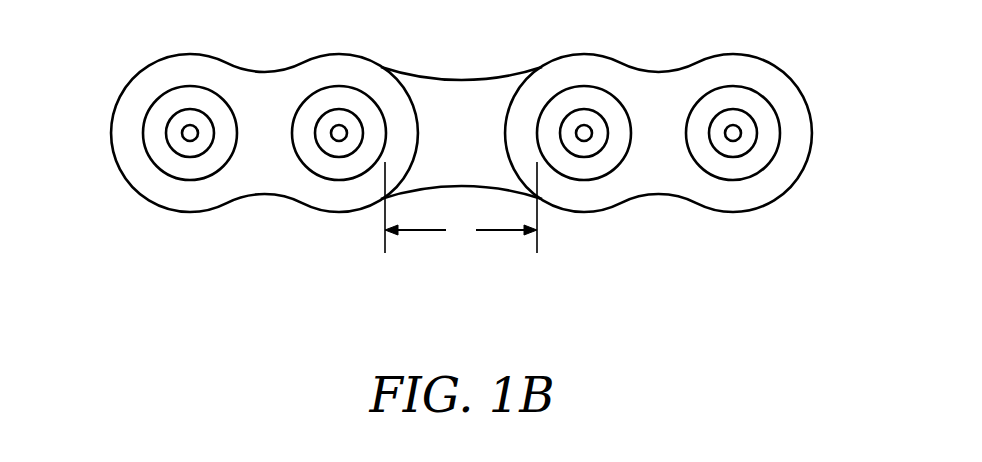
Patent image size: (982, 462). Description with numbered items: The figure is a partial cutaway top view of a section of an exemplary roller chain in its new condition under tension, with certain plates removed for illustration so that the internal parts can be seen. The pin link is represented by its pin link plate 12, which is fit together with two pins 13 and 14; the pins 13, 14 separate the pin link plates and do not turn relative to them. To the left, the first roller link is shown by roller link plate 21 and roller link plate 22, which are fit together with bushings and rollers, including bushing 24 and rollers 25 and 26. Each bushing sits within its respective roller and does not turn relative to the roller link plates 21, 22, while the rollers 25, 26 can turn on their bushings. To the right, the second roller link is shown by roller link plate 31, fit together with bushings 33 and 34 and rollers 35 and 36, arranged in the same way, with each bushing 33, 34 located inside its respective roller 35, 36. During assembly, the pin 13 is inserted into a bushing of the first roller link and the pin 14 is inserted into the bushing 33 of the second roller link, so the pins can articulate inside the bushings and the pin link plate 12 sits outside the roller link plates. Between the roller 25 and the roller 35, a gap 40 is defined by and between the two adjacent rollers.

The pin link plate 12 is at (479, 77).
The pin 13 is at (339, 124).
The pin 14 is at (590, 122).
The roller link plate 21 is at (264, 68).
The roller link plate 22 is at (361, 118).
The bushing 24 is at (188, 109).
The roller 25 is at (338, 179).
The roller 26 is at (190, 179).
The roller link plate 31 is at (658, 70).
The bushing 33 is at (566, 117).
The bushing 34 is at (748, 151).
The roller 35 is at (579, 179).
The roller 36 is at (734, 86).
The gap 40 is at (461, 207).